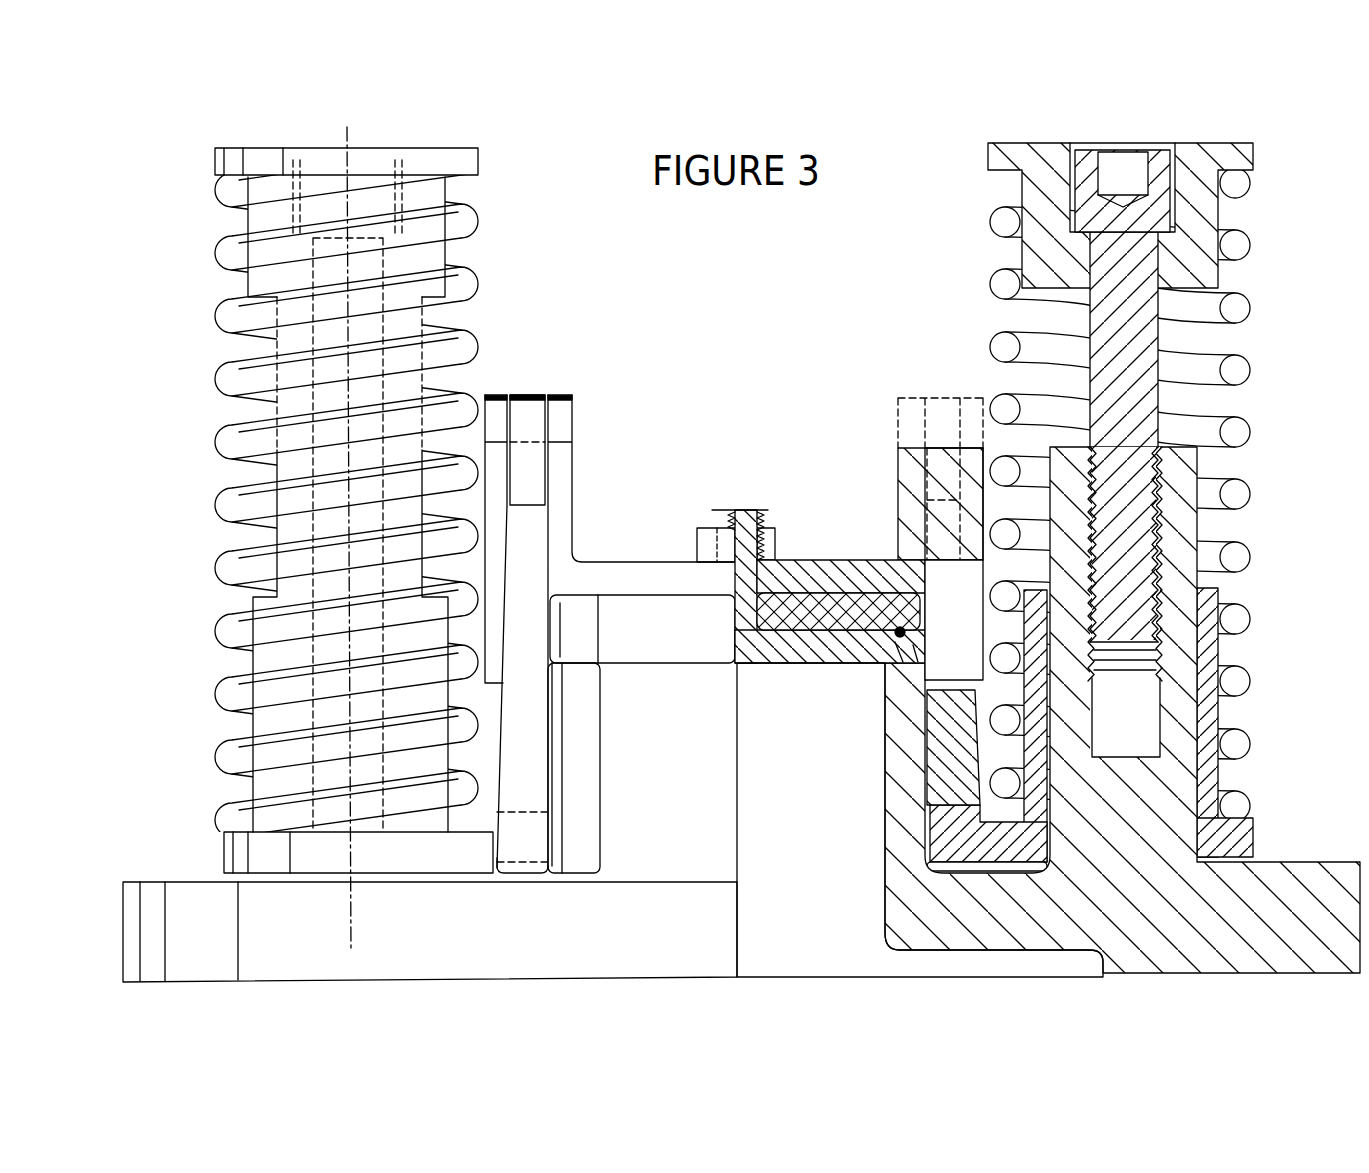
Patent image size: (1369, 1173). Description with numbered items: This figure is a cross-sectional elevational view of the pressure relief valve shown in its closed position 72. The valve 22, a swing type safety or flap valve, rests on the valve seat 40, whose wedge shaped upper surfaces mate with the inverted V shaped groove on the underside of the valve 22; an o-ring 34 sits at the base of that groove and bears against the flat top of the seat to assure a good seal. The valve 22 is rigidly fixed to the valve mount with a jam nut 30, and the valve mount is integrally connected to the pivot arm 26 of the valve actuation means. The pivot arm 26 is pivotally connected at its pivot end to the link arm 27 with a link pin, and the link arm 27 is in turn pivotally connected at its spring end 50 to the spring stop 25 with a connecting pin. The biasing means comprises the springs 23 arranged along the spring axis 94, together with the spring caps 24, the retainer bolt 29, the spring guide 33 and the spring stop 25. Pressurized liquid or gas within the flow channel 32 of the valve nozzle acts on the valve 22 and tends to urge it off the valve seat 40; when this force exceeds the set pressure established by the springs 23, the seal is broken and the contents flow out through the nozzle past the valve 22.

The spring axis 94 is at (375, 107).
The closed position 72 is at (640, 288).
The springs 23 is at (462, 352).
The pivot arm 26 is at (492, 423).
The link arm 27 is at (522, 430).
The jam nut 30 is at (697, 540).
The valve 22 is at (745, 525).
The valve seat 40 is at (900, 636).
The o-ring 34 is at (935, 700).
The spring stop 25 is at (900, 805).
The spring end 50 is at (925, 840).
The flow channel 32 is at (767, 855).
The spring caps 24 is at (1100, 365).
The retainer bolt 29 is at (1085, 440).
The spring guide 33 is at (1060, 460).